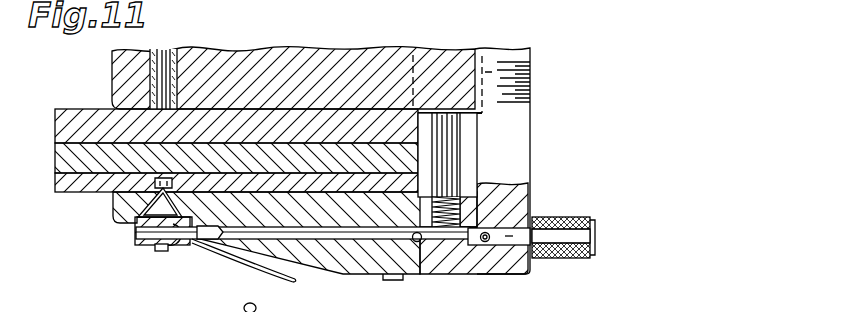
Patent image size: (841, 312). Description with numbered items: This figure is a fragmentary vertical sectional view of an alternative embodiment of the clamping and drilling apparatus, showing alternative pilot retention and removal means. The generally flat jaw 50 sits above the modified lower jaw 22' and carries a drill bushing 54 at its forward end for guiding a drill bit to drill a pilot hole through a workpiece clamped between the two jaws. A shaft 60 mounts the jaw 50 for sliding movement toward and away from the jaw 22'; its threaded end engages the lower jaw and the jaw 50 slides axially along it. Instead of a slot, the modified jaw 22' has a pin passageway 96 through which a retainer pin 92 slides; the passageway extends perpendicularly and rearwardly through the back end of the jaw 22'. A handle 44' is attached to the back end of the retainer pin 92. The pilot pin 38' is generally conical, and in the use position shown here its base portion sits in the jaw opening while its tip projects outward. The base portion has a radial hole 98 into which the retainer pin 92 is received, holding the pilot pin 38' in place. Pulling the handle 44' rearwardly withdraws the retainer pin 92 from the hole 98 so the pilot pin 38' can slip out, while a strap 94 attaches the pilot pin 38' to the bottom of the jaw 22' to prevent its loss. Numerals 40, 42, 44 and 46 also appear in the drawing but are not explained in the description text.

The modified lower jaw 22' is at (513, 161).
The jaw 50 is at (335, 63).
The drill bushing 54 is at (172, 50).
The shaft 60 is at (447, 152).
The pilot pin 38' is at (135, 241).
The radial hole 98 is at (175, 248).
The retainer pin 92 is at (368, 229).
The pin passageway 96 is at (418, 242).
The strap 94 is at (293, 282).
The handle 44' is at (586, 216).
The frame member 40 is at (472, 7).
The guide 46 is at (544, 7).
The bar 42 is at (543, 9).
The knob 44 is at (705, 9).